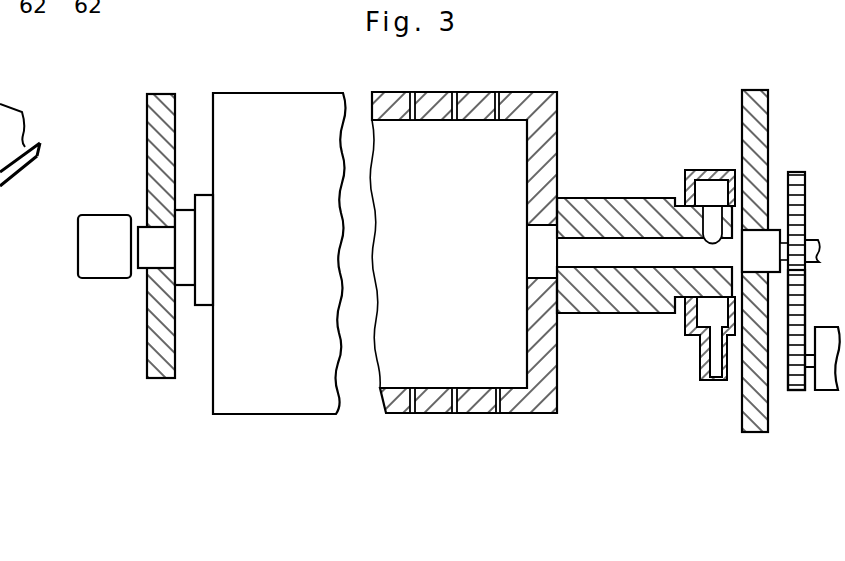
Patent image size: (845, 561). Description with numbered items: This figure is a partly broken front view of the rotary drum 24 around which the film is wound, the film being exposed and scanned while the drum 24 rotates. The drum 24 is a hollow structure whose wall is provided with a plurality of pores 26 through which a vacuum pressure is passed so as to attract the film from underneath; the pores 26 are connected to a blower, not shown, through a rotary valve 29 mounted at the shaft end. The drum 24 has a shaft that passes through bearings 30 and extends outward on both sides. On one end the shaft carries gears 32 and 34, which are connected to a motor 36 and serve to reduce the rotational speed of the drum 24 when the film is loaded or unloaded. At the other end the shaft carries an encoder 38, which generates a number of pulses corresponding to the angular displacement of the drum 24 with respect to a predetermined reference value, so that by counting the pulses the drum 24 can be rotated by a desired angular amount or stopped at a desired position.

The rotary drum 24 is at (561, 104).
The pores 26 is at (410, 92).
The rotary valve 29 is at (702, 170).
The bearings 30 is at (147, 140).
The gear 32 is at (806, 190).
The gear 34 is at (797, 392).
The motor 36 is at (826, 390).
The encoder 38 is at (108, 274).